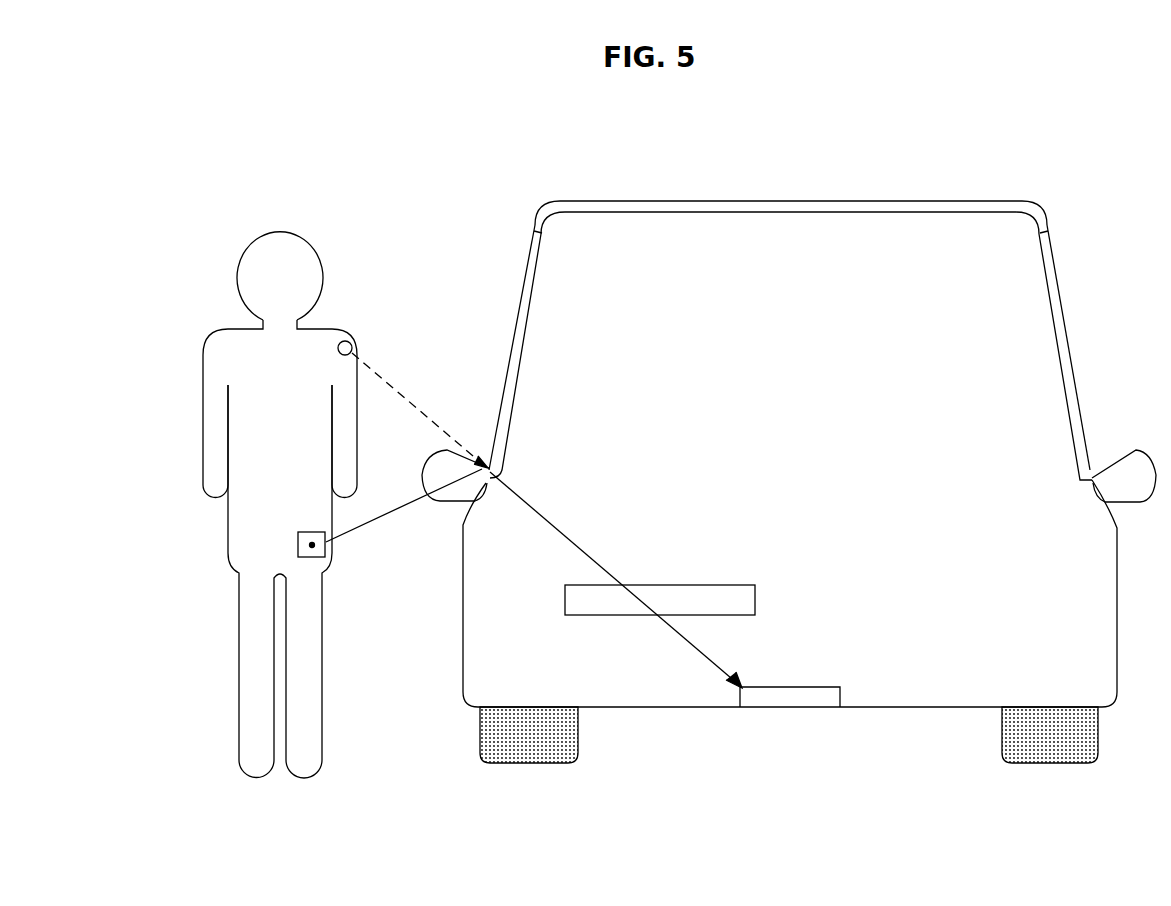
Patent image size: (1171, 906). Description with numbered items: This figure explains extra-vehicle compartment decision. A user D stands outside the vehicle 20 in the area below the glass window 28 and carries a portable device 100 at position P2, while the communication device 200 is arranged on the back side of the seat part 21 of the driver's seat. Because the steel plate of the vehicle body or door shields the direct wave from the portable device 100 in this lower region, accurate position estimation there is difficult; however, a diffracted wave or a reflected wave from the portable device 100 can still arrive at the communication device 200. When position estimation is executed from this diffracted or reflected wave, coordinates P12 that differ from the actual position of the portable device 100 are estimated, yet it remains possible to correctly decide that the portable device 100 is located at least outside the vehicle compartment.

The vehicle 20 is at (952, 186).
The glass window 28 is at (513, 322).
The seat part of driver's seat 21 is at (757, 597).
The communication device 200 is at (826, 686).
The portable device 100 is at (323, 558).
The position of portable device P2 is at (297, 545).
The coordinates P12 is at (349, 341).
The user D is at (283, 230).